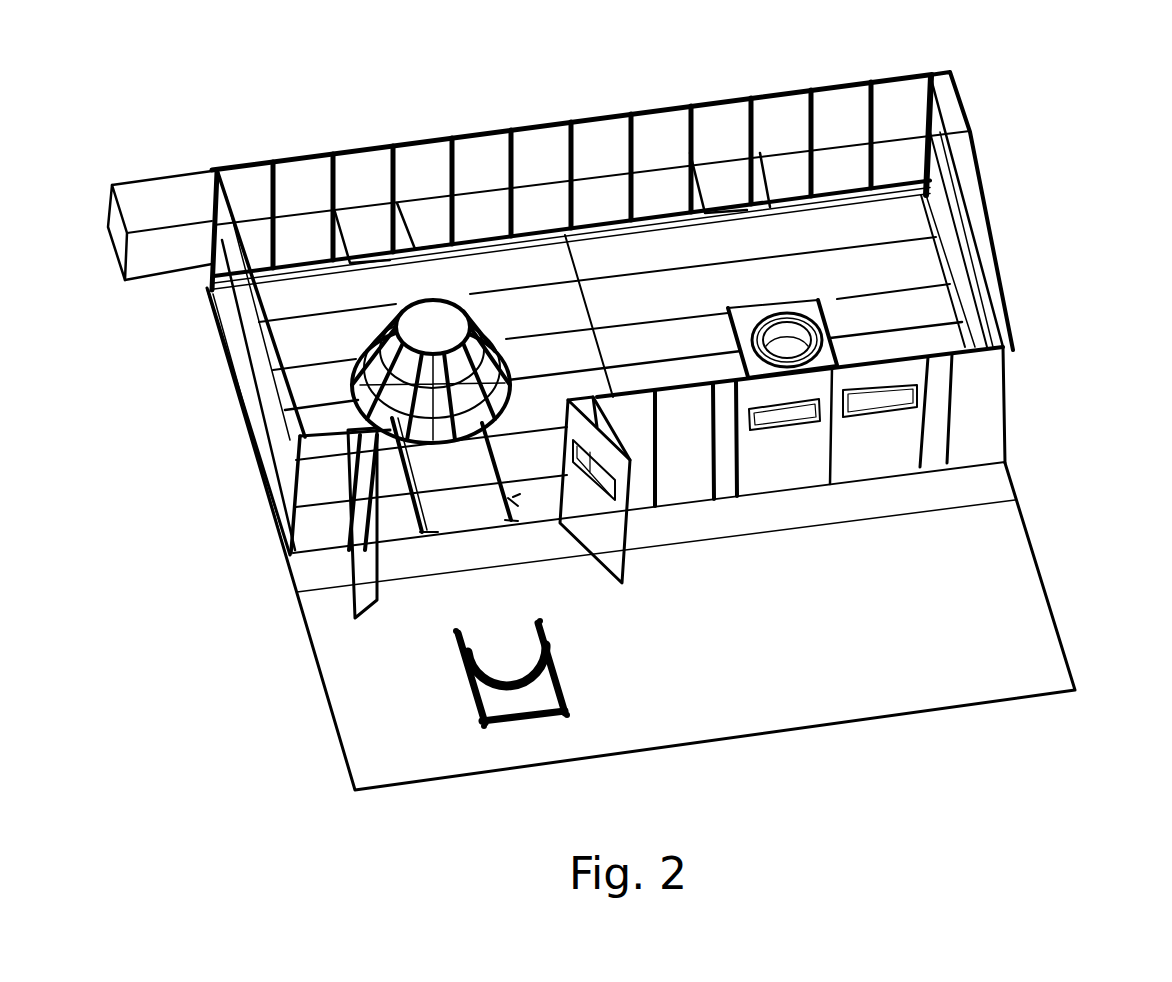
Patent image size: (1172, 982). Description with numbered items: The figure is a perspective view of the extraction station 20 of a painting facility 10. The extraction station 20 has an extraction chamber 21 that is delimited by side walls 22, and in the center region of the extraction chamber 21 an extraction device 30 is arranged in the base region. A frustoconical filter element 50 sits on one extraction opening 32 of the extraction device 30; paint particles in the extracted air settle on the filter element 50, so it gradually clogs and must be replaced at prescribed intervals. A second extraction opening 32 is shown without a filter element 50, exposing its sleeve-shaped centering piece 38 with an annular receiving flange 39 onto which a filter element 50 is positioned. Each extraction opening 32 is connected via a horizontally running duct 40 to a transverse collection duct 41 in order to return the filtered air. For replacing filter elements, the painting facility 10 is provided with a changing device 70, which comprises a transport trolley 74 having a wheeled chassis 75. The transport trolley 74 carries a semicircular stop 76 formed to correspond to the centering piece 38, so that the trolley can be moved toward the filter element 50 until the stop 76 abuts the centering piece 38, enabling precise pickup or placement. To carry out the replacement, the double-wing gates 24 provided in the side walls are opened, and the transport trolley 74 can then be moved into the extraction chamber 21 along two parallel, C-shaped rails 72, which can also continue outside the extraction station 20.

The painting facility 10 is at (1032, 172).
The extraction station 20 is at (300, 340).
The extraction chamber 21 is at (533, 267).
The side walls 22 is at (313, 497).
The double-wing gates 24 is at (350, 563).
The extraction device 30 is at (410, 430).
The extraction opening 32 is at (788, 345).
The centering piece 38 is at (770, 313).
The annular receiving flange 39 is at (776, 322).
The duct 40 is at (357, 233).
The transverse collection duct 41 is at (163, 264).
The filter element 50 is at (343, 383).
The changing device 70 is at (459, 738).
The rails 72 is at (513, 502).
The transport trolley 74 is at (562, 695).
The chassis 75 is at (512, 737).
The semicircular stop 76 is at (533, 722).